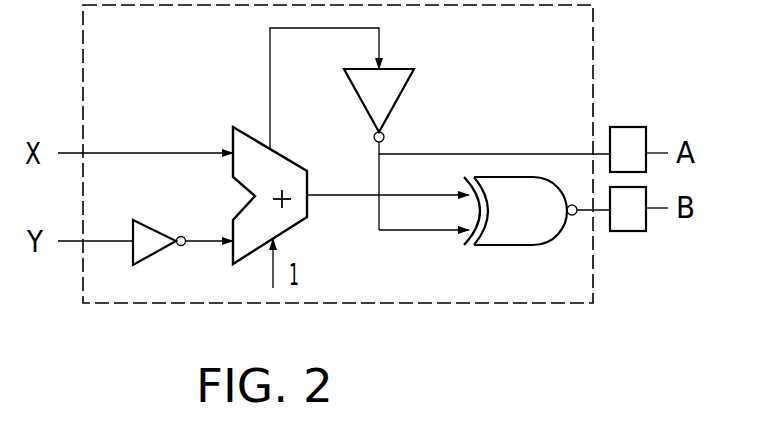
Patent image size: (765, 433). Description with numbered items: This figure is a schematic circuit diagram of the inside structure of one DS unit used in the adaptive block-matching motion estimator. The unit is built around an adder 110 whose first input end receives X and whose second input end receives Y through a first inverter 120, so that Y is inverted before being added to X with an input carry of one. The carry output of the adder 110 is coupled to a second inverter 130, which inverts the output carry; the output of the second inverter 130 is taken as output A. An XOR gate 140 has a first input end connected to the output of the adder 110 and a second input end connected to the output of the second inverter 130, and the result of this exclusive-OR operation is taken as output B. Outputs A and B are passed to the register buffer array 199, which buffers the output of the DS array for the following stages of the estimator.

The adder 110 is at (246, 133).
The first inverter 120 is at (155, 253).
The second inverter 130 is at (397, 69).
The XOR gate 140 is at (508, 245).
The register buffer array 199 is at (625, 127).